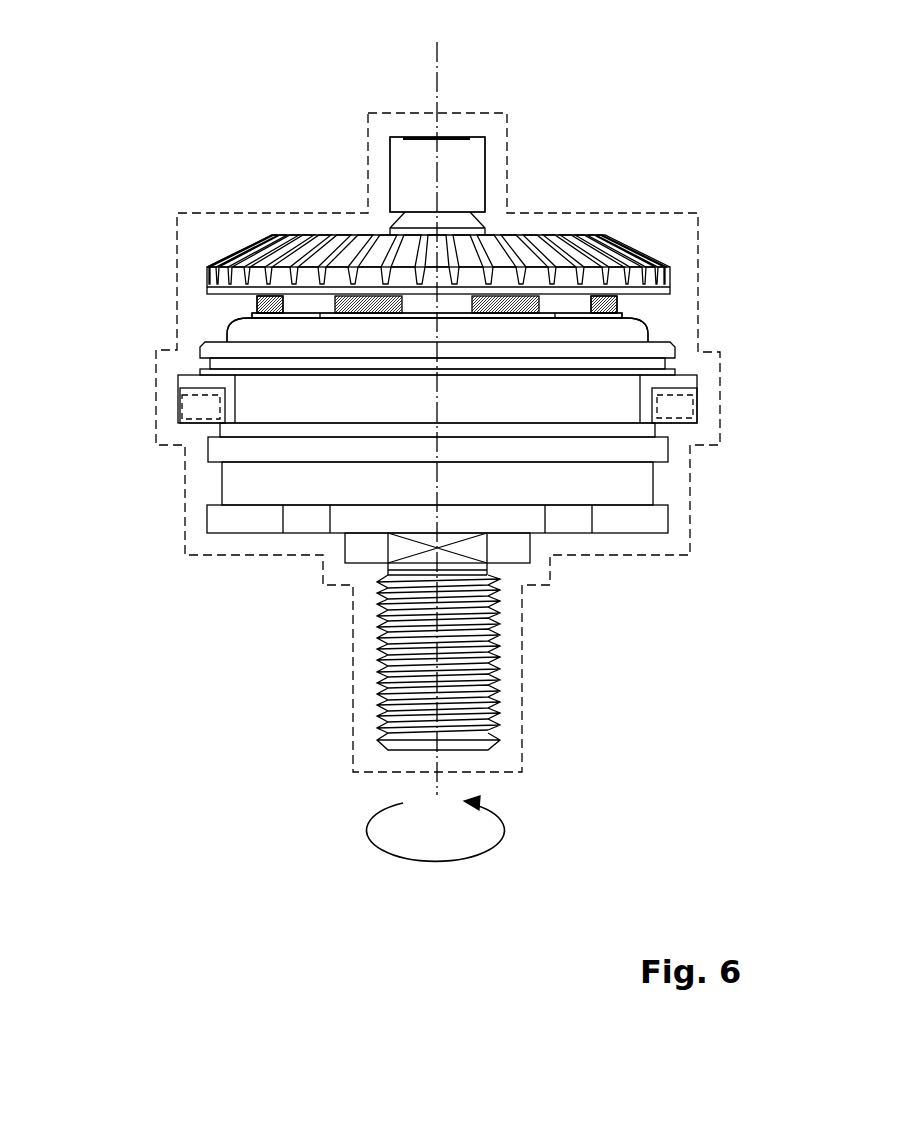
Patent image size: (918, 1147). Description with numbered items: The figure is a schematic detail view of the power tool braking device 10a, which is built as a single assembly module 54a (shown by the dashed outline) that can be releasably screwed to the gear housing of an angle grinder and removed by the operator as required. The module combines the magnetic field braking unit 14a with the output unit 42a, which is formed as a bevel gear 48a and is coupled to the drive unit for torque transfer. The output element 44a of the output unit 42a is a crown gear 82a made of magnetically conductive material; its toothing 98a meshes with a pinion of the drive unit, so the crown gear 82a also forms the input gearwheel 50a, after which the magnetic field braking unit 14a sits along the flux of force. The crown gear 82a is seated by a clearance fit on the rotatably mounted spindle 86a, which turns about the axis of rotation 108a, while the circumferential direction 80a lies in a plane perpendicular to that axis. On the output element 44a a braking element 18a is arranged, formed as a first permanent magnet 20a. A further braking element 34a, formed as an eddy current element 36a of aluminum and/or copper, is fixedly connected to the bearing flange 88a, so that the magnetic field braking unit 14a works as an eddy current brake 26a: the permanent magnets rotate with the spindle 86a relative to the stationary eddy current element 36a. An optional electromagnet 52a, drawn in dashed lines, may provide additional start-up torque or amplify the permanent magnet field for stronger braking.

The power tool braking device 10a is at (172, 55).
The axis of rotation 108a is at (439, 55).
The magnetic field braking unit 14a is at (145, 361).
The assembly module 54a is at (368, 161).
The toothing 98a is at (600, 233).
The crown gear 82a is at (650, 283).
The output element 44a is at (660, 289).
The input gearwheel 50a is at (437, 315).
The braking element 18a is at (622, 307).
The first permanent magnet 20a is at (437, 304).
The further braking element 34a is at (225, 333).
The eddy current element 36a is at (437, 330).
The eddy current brake 26a is at (145, 391).
The electromagnet 52a is at (697, 410).
The bearing flange 88a is at (650, 490).
The bevel gear 48a is at (172, 626).
The output unit 42a is at (211, 648).
The spindle 86a is at (480, 680).
The circumferential direction 80a is at (438, 862).